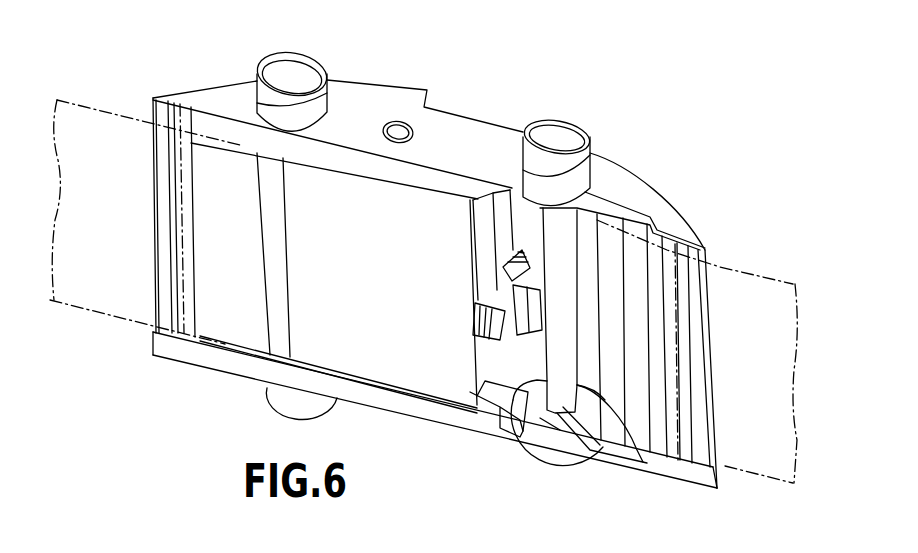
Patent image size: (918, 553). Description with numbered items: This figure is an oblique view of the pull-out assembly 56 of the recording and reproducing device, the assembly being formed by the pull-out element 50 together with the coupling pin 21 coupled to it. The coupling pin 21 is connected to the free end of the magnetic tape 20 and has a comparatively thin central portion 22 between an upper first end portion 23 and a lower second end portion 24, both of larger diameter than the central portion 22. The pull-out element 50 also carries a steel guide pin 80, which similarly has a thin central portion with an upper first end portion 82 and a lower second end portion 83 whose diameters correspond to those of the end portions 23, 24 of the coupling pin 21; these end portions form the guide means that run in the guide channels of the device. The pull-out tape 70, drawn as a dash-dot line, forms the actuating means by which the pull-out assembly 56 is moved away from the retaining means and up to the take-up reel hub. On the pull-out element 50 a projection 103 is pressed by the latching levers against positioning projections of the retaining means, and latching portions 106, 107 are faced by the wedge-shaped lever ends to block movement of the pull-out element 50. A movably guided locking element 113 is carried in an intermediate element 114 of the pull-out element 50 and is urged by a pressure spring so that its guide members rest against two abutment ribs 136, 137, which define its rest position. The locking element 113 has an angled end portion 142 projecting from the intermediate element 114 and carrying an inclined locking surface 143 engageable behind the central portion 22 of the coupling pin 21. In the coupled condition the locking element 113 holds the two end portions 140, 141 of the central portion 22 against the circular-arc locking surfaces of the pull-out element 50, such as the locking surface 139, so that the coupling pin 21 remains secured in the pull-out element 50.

The pull-out tape 70 is at (93, 118).
The guide pin 80 is at (257, 64).
The first end portion 82 is at (325, 80).
The projection 103 is at (488, 153).
The coupling pin 21 is at (553, 118).
The pull-out assembly 56 is at (596, 104).
The upper first end portion 23 is at (588, 162).
The latching portion 106 is at (596, 200).
The pull-out element 50 is at (668, 205).
The magnetic tape 20 is at (728, 275).
The end portion 140 is at (493, 209).
The locking element 113 is at (515, 260).
The abutment rib 136 is at (484, 278).
The angled end portion 142 is at (527, 282).
The abutment rib 137 is at (483, 337).
The locking surface 143 is at (548, 310).
The central portion 22 is at (557, 336).
The end portion 141 is at (500, 398).
The second end portion 83 is at (290, 397).
The intermediate element 114 is at (366, 356).
The locking surface 139 is at (563, 447).
The lower second end portion 24 is at (557, 463).
The latching portion 107 is at (567, 447).